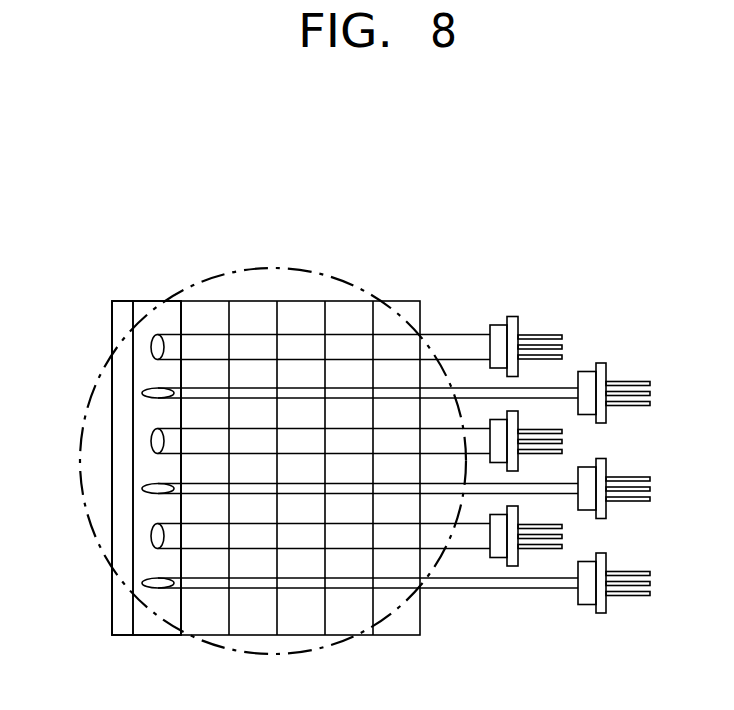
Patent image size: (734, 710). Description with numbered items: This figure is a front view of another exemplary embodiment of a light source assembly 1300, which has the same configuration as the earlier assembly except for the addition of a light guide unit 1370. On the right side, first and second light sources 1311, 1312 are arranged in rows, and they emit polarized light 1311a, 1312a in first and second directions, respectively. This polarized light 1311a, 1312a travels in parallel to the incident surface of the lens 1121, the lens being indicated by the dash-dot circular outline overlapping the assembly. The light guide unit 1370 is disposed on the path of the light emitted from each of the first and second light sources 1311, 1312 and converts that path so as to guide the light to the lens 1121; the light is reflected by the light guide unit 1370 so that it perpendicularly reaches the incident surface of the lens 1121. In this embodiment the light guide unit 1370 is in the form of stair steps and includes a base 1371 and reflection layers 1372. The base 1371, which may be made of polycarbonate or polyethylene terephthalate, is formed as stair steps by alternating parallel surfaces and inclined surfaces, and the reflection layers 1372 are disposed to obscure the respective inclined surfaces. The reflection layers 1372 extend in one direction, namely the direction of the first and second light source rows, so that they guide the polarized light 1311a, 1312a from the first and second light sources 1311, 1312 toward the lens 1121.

The light source assembly 1300 is at (586, 250).
The light guide unit 1370 is at (203, 200).
The base 1371 is at (122, 313).
The reflection layers 1372 is at (158, 313).
The lens 1121 is at (290, 268).
The first light source 1311 is at (498, 330).
The second light source 1312 is at (587, 378).
The polarized light in first direction 1311a is at (151, 346).
The polarized light in second direction 1312a is at (148, 392).